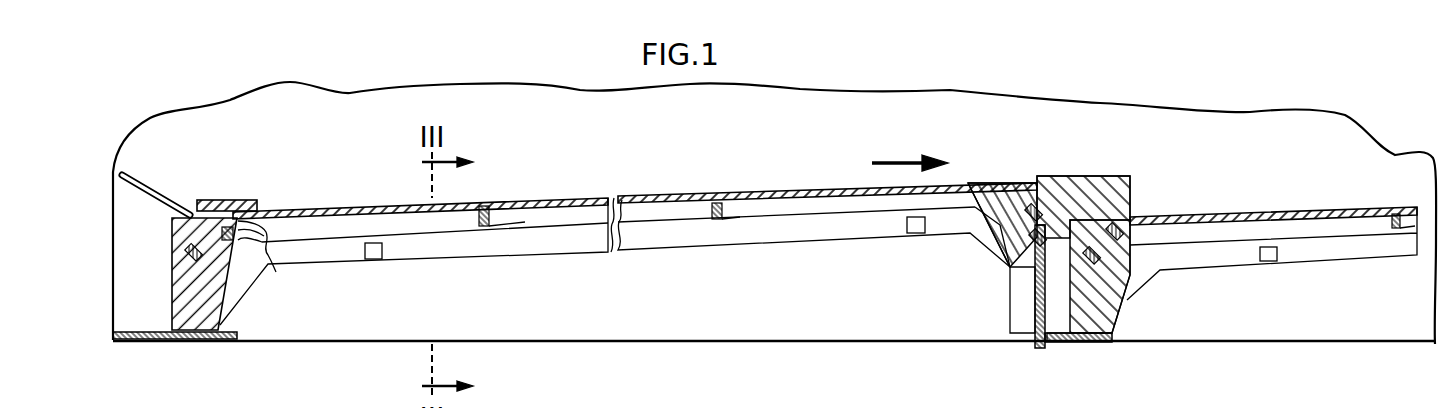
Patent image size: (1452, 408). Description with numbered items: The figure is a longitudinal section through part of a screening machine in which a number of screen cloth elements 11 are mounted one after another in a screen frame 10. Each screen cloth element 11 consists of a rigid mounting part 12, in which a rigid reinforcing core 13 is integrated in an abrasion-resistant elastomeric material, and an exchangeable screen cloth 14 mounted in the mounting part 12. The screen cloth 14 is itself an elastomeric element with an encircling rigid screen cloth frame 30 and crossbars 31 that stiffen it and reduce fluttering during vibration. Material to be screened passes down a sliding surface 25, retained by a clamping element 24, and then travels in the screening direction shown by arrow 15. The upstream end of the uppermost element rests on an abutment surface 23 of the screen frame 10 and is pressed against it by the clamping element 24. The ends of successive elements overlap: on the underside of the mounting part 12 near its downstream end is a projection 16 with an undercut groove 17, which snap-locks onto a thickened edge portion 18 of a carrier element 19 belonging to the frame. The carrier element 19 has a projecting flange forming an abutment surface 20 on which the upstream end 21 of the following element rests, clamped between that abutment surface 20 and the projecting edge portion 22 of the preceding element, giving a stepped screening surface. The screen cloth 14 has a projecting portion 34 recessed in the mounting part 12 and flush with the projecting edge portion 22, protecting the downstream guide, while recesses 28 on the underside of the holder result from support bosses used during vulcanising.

The screen frame 10 is at (677, 320).
The screen cloth elements 11 is at (333, 210).
The mounting part 12 is at (636, 257).
The reinforcing core 13 is at (172, 257).
The screen cloth 14 is at (535, 200).
The arrow 15 is at (907, 151).
The projection 16 is at (988, 253).
The undercut groove 17 is at (1017, 268).
The thickened edge portion 18 is at (1018, 278).
The carrier element 19 is at (1012, 336).
The abutment surface 20 is at (1079, 341).
The upstream end 21 is at (1127, 300).
The projecting edge portion 22 is at (1135, 193).
The abutment surface 23 is at (195, 341).
The clamping element 24 is at (224, 200).
The sliding surface 25 is at (150, 184).
The recesses 28 is at (374, 260).
The screen cloth frame 30 is at (276, 262).
The crossbars 31 is at (523, 218).
The projecting portion 34 is at (1010, 183).